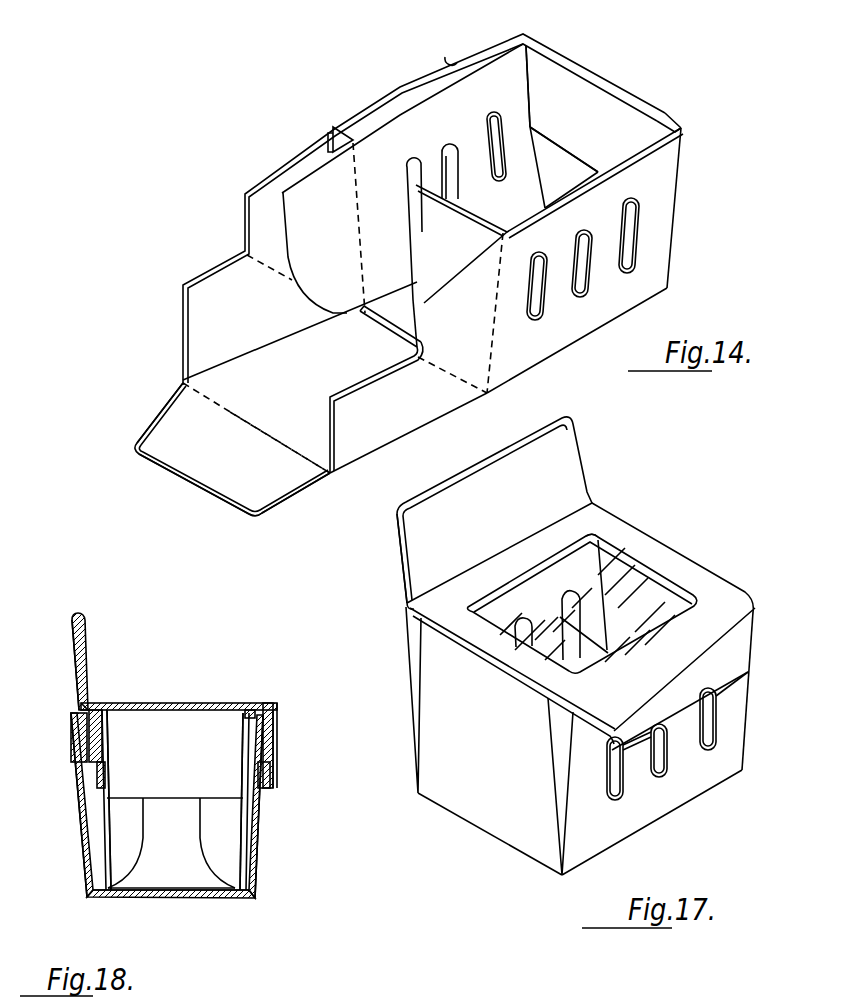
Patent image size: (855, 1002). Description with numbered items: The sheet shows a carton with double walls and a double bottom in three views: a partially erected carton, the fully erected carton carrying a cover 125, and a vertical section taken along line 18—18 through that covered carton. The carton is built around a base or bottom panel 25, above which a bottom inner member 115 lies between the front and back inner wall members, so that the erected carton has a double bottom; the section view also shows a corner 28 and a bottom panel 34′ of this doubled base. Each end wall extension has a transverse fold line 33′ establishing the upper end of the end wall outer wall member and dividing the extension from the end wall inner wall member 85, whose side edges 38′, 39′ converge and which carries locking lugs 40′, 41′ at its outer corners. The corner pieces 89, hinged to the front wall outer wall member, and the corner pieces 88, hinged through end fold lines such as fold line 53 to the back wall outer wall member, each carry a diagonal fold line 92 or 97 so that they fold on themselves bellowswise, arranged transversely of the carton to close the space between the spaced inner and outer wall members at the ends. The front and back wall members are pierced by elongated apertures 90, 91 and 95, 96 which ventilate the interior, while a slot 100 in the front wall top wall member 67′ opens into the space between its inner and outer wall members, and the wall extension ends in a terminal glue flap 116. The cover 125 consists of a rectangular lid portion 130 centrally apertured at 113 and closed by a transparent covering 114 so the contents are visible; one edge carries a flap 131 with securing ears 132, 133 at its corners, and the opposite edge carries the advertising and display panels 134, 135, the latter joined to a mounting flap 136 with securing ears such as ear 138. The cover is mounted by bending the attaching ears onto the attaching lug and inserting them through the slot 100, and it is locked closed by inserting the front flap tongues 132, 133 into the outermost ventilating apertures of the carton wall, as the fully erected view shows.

In FIG. 17, the section line 18— 18 is at (493, 487).
In FIG. 14, the base or bottom panel 25 is at (363, 313).
In FIG. 18, the base or bottom panel 25 is at (185, 895).
In FIG. 14, the corner flange 28 is at (391, 330).
In FIG. 14, the transverse score or fold line 33′ is at (234, 413).
In FIG. 14, the bottom panel 34′ is at (270, 432).
In FIG. 17, the bottom panel 34′ is at (517, 837).
In FIG. 18, the bottom panel 34′ is at (173, 888).
In FIG. 14, the side edge 38′ is at (168, 407).
In FIG. 14, the side edge 39′ is at (295, 488).
In FIG. 14, the locking lug 40′ is at (528, 95).
In FIG. 18, the locking lug 40′ is at (102, 775).
In FIG. 14, the locking lug 41′ is at (261, 504).
In FIG. 18, the locking lug 41′ is at (242, 774).
In FIG. 14, the end score or fold line 53 is at (494, 352).
In FIG. 14, the front wall top wall member 67′ is at (357, 118).
In FIG. 14, the end wall inner wall member 85 is at (597, 98).
In FIG. 17, the end wall inner wall member 85 is at (648, 583).
In FIG. 18, the end wall inner wall member 85 is at (185, 797).
In FIG. 14, the corner piece 88 is at (670, 127).
In FIG. 17, the corner piece 88 is at (563, 773).
In FIG. 14, the corner piece 89 is at (528, 33).
In FIG. 17, the corner piece 89 is at (413, 678).
In FIG. 18, the elongated aperture 90 is at (79, 828).
In FIG. 14, the elongated aperture 91 is at (456, 140).
In FIG. 18, the elongated aperture 91 is at (123, 798).
In FIG. 14, the diagonal score or fold line 92 is at (268, 269).
In FIG. 14, the elongated aperture 95 is at (580, 240).
In FIG. 17, the elongated aperture 95 is at (668, 765).
In FIG. 18, the elongated aperture 95 is at (265, 831).
In FIG. 18, the elongated aperture 96 is at (240, 792).
In FIG. 14, the diagonal score or fold line 97 is at (470, 374).
In FIG. 14, the slot 100 is at (458, 62).
In FIG. 17, the central aperture 113 is at (620, 549).
In FIG. 18, the central aperture 113 is at (200, 690).
In FIG. 17, the transparent covering 114 is at (603, 536).
In FIG. 14, the base or bottom inner member 115 is at (405, 338).
In FIG. 18, the base or bottom inner member 115 is at (155, 887).
In FIG. 14, the terminal glue flap 116 is at (332, 134).
In FIG. 17, the modified cover 125 is at (663, 464).
In FIG. 17, the cover or lid portion 130 is at (652, 548).
In FIG. 18, the cover or lid portion 130 is at (255, 703).
In FIG. 17, the flap 131 is at (638, 740).
In FIG. 18, the flap 131 is at (278, 731).
In FIG. 17, the securing ear 132 is at (627, 736).
In FIG. 17, the securing ear 133 is at (710, 691).
In FIG. 18, the securing ear 133 is at (270, 763).
In FIG. 17, the advertising and display panel 134 is at (578, 434).
In FIG. 18, the advertising and display panel 134 is at (83, 666).
In FIG. 17, the advertising and display panel 135 is at (399, 580).
In FIG. 18, the advertising and display panel 135 is at (72, 678).
In FIG. 18, the mounting flap 136 is at (80, 733).
In FIG. 18, the securing ear 138 is at (92, 734).